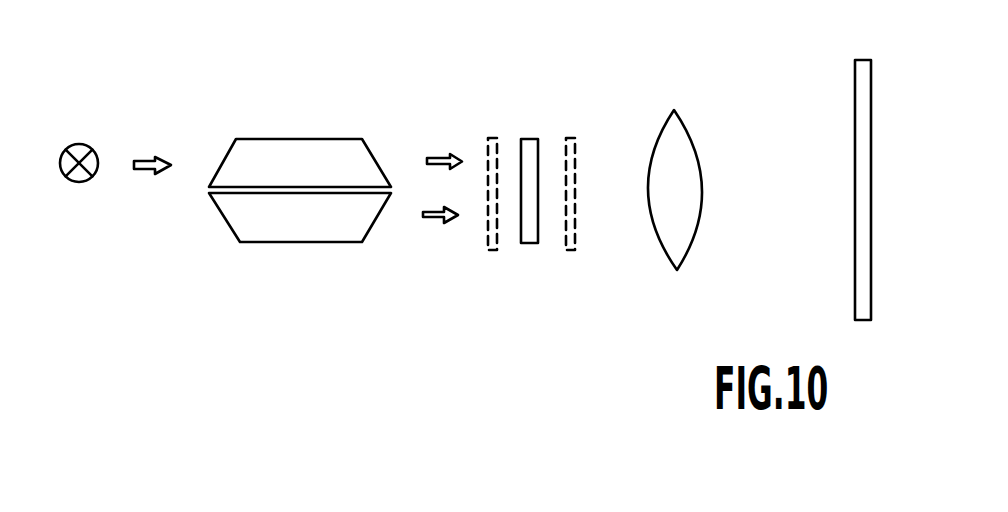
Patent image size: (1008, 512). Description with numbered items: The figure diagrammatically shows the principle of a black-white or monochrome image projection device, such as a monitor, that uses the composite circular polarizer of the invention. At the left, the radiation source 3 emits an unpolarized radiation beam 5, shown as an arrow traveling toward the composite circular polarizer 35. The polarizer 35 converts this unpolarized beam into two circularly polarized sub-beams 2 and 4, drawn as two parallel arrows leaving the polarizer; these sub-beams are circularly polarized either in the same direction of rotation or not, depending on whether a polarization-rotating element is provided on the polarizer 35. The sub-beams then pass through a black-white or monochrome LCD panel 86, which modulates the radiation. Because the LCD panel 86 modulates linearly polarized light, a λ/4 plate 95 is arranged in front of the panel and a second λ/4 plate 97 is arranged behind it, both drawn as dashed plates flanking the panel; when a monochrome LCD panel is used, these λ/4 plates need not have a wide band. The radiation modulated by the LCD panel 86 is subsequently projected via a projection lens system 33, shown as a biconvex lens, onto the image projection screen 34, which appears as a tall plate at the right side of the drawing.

The radiation source 3 is at (79, 144).
The unpolarized radiation beam 5 is at (144, 157).
The composite circular polarizer 35 is at (272, 90).
The circularly polarized sub-beam 2 is at (437, 157).
The circularly polarized sub-beam 4 is at (432, 220).
The λ/4 plate 95 is at (492, 136).
The LCD panel 86 is at (529, 244).
The λ/4 plate 97 is at (573, 136).
The projection lens system 33 is at (677, 270).
The image projection screen 34 is at (860, 327).